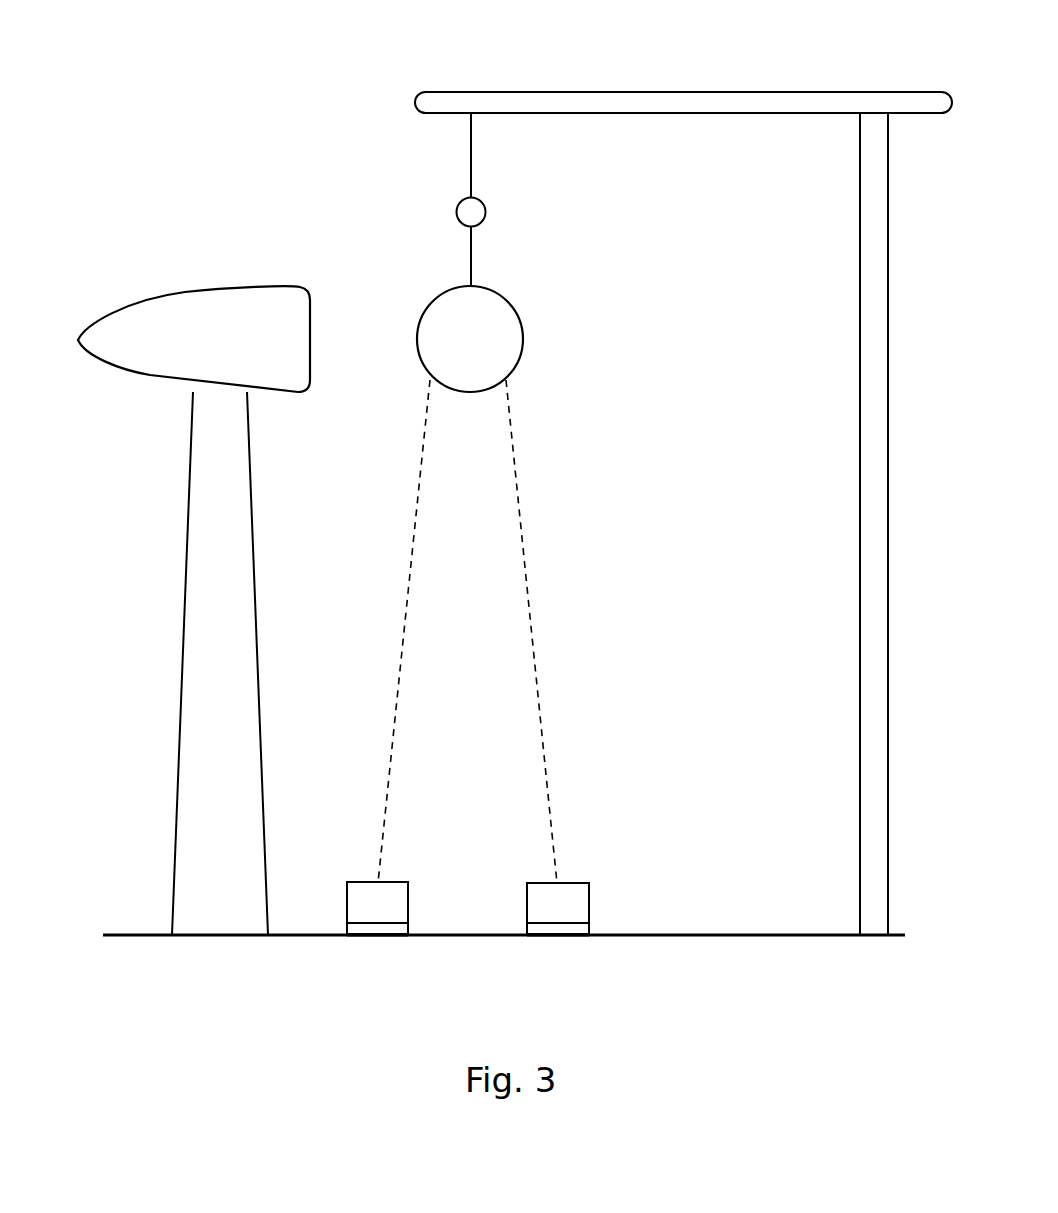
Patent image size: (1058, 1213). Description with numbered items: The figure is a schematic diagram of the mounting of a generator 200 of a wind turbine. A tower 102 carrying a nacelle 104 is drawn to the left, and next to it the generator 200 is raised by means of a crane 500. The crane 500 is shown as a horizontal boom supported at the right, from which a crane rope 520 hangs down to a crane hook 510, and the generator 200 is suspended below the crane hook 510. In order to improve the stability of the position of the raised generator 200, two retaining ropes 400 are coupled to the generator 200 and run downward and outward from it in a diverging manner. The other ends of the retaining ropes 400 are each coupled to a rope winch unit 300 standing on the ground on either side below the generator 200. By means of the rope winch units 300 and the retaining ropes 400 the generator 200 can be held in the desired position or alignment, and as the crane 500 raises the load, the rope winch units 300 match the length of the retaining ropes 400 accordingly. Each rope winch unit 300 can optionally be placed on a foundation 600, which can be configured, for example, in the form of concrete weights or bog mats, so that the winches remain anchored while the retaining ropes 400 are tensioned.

The crane 500 is at (637, 100).
The crane rope 520 is at (471, 150).
The crane hook 510 is at (486, 212).
The generator 200 is at (523, 338).
The retaining ropes 400 is at (408, 603).
The rope winch unit 300 is at (400, 905).
The foundation 600 is at (380, 936).
The wind turbine tower 102 is at (195, 660).
The nacelle 104 is at (123, 327).